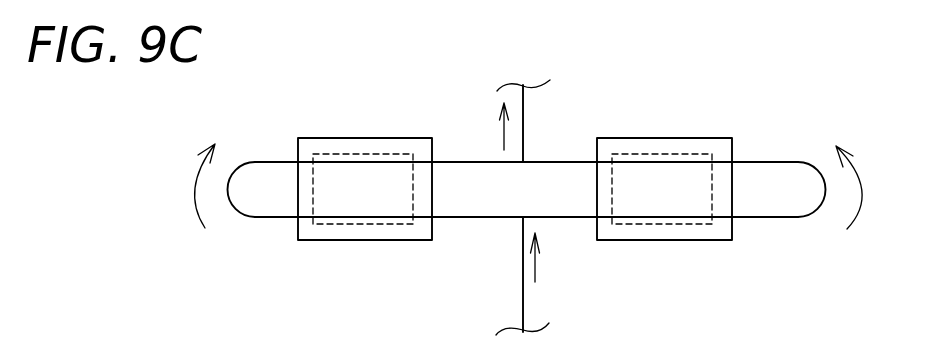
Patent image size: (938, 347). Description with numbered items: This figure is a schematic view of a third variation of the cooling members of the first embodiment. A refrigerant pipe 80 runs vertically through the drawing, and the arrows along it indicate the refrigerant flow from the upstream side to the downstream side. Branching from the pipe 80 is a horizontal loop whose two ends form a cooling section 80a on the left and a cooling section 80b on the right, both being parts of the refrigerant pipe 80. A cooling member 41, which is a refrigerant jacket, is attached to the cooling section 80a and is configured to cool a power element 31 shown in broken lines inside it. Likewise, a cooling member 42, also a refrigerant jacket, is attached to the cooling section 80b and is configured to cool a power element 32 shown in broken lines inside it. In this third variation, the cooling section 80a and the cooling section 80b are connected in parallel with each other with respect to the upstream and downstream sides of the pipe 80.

The refrigerant pipe 80 is at (524, 119).
The cooling section 80a is at (259, 162).
The cooling section 80b is at (800, 162).
The cooling member 41 is at (363, 138).
The cooling member 42 is at (653, 138).
The power element 31 is at (363, 225).
The power element 32 is at (667, 225).